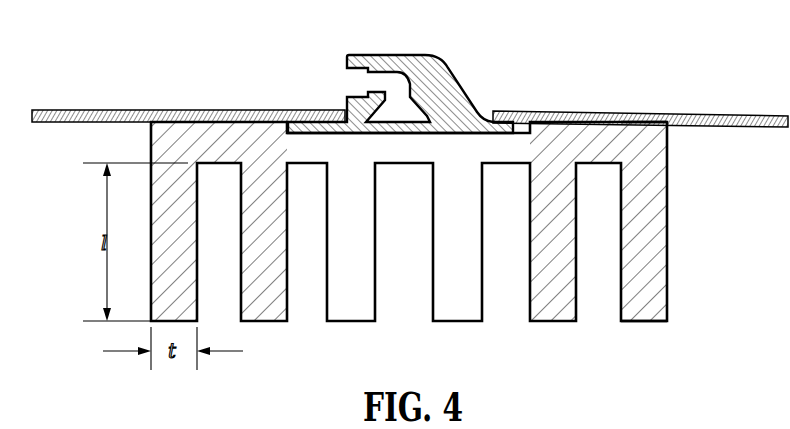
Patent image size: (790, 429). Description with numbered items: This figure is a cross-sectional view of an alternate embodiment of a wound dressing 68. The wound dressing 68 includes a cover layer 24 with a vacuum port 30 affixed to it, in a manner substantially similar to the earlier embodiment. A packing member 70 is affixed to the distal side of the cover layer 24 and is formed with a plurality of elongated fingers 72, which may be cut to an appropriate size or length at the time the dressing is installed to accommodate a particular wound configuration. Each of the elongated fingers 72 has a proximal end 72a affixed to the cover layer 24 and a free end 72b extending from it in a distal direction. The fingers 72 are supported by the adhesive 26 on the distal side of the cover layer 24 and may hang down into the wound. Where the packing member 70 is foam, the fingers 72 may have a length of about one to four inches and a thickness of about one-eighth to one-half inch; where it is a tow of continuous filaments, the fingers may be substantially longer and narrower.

The cover layer 24 is at (559, 108).
The adhesive 26 is at (219, 116).
The vacuum port 30 is at (428, 55).
The wound dressing 68 is at (410, 166).
The packing member 70 is at (462, 203).
The elongated fingers 72 is at (363, 242).
The proximal end 72a is at (657, 137).
The free end 72b is at (653, 300).